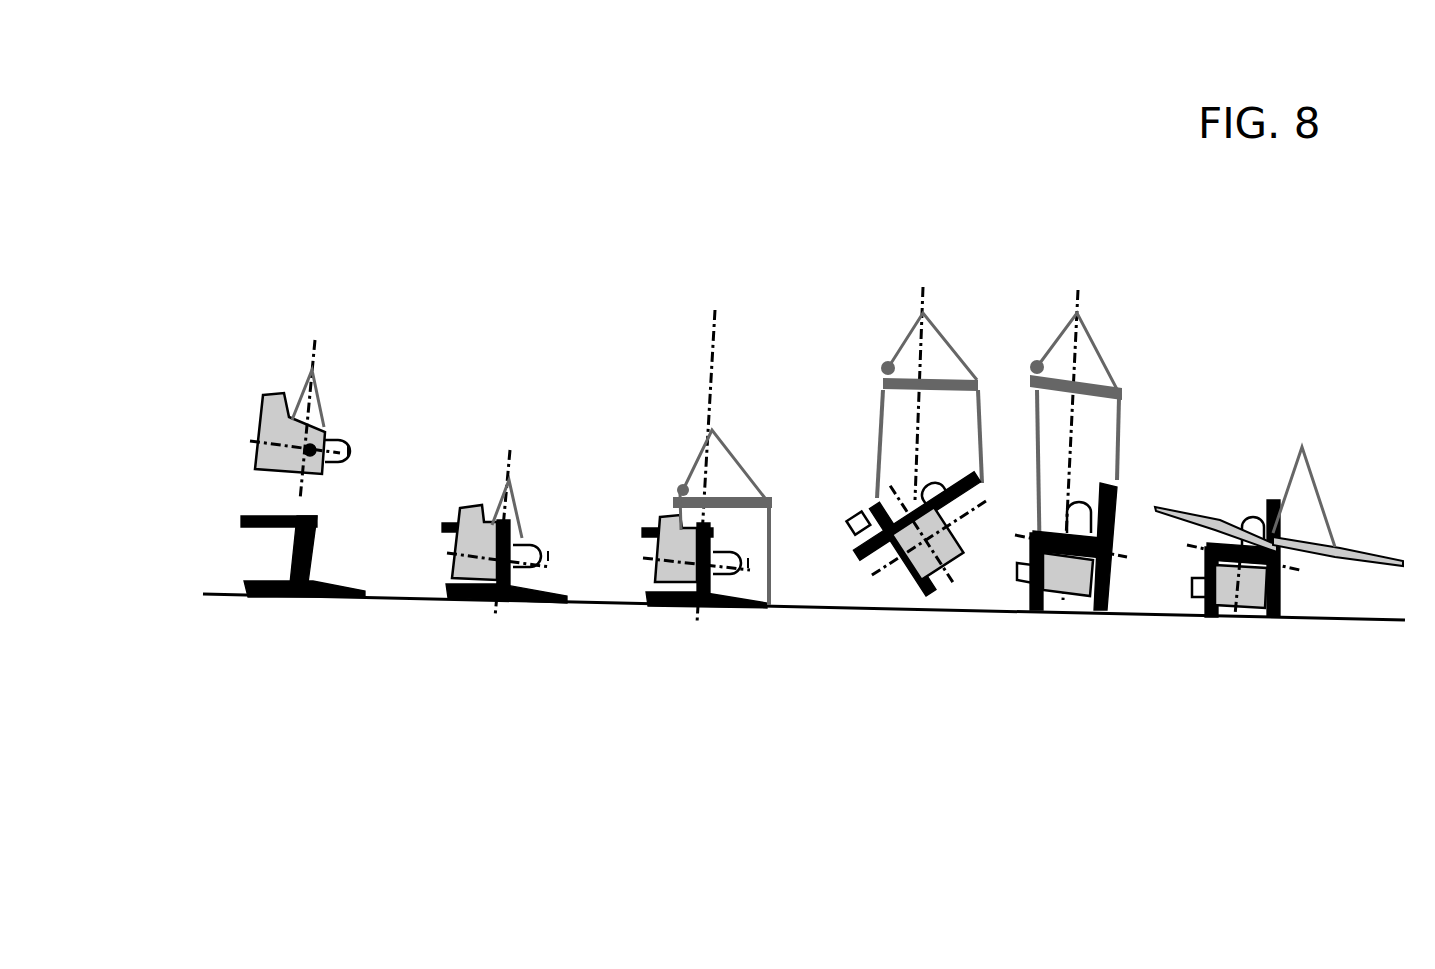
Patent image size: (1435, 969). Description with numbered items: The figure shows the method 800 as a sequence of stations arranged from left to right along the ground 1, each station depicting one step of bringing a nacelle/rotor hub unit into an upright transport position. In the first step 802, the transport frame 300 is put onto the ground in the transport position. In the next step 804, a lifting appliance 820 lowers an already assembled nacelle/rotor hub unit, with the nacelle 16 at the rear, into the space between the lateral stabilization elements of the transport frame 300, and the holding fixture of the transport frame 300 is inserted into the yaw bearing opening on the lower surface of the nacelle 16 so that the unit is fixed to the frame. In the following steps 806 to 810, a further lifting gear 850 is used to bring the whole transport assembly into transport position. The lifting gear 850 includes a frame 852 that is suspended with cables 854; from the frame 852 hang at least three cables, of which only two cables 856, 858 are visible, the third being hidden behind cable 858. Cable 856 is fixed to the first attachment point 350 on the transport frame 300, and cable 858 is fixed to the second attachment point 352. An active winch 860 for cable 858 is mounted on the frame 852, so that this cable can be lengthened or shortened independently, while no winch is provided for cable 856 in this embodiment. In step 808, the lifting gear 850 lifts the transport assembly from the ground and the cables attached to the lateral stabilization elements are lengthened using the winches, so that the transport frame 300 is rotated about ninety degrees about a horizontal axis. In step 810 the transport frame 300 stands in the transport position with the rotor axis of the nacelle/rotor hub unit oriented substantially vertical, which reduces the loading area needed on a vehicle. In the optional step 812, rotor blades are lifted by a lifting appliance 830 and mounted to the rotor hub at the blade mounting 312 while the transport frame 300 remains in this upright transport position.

The method 800 is at (343, 112).
The ground 1 is at (205, 596).
The first step 802 is at (325, 686).
The step 804 is at (517, 686).
The step 806 is at (712, 686).
The step 808 is at (907, 686).
The step 810 is at (1099, 686).
The optional step 812 is at (1293, 686).
The transport frame 300 is at (228, 545).
The nacelle 16 is at (268, 415).
The lifting appliance 820 is at (318, 395).
The lifting gear 850 is at (719, 421).
The frame 852 is at (737, 503).
The cables 854 is at (717, 437).
The cable 856 is at (770, 557).
The cable 858 is at (678, 533).
The active winch 860 is at (683, 487).
The second attachment point 352 is at (660, 553).
The first attachment point 350 is at (766, 628).
The lifting appliance 830 is at (1302, 447).
The blade mounting 312 is at (1297, 553).